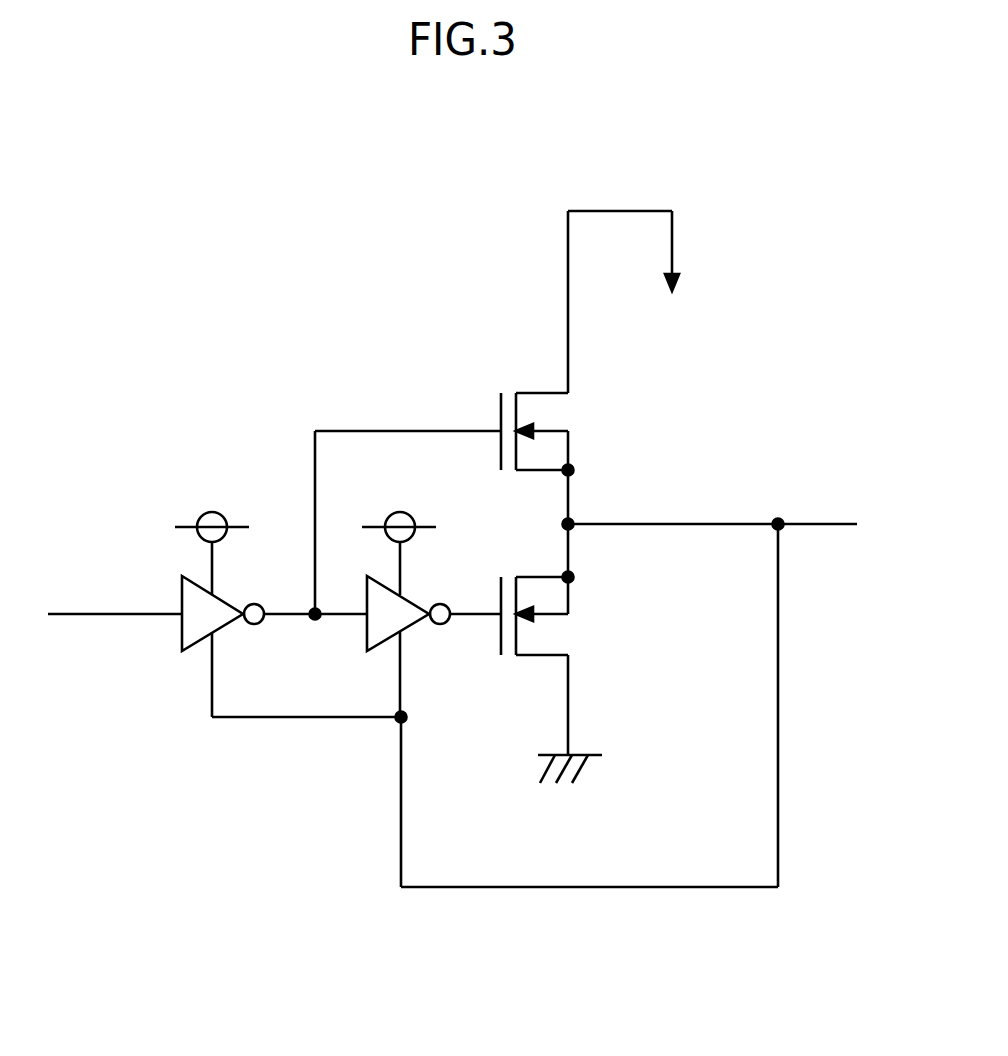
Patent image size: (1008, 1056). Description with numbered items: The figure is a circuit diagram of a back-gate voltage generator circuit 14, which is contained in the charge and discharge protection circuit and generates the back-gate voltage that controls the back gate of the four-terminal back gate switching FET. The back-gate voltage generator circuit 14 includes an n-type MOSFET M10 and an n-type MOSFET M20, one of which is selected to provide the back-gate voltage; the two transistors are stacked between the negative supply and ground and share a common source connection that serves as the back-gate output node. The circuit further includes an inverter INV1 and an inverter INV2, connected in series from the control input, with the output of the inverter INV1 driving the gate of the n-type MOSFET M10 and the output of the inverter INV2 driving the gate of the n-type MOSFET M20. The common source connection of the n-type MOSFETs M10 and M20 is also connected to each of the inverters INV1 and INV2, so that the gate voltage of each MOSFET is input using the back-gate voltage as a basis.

The back-gate voltage generator circuit 14 is at (118, 199).
The inverter INV1 is at (228, 597).
The inverter INV2 is at (415, 597).
The n-type MOSFET M10 is at (571, 343).
The n-type MOSFET M20 is at (571, 666).